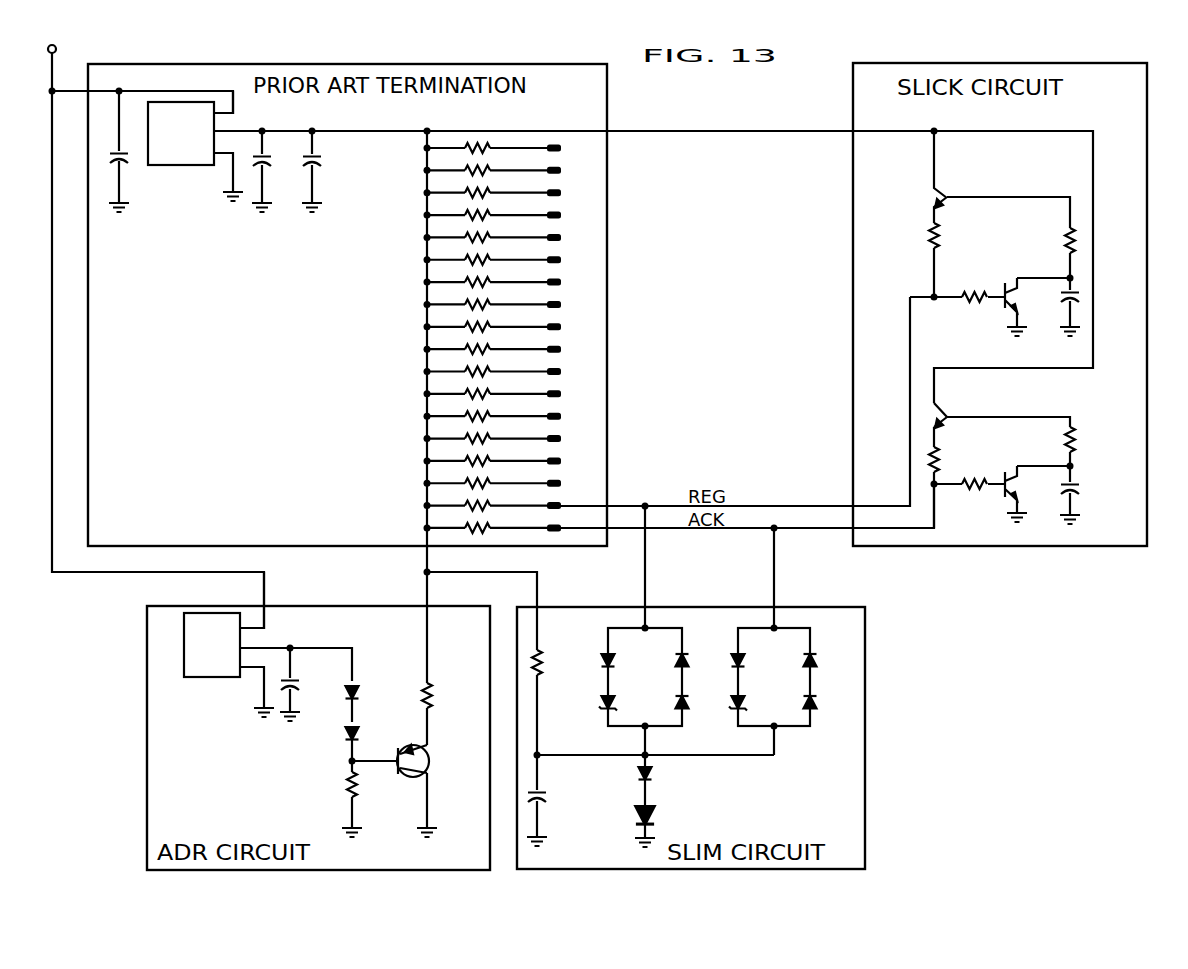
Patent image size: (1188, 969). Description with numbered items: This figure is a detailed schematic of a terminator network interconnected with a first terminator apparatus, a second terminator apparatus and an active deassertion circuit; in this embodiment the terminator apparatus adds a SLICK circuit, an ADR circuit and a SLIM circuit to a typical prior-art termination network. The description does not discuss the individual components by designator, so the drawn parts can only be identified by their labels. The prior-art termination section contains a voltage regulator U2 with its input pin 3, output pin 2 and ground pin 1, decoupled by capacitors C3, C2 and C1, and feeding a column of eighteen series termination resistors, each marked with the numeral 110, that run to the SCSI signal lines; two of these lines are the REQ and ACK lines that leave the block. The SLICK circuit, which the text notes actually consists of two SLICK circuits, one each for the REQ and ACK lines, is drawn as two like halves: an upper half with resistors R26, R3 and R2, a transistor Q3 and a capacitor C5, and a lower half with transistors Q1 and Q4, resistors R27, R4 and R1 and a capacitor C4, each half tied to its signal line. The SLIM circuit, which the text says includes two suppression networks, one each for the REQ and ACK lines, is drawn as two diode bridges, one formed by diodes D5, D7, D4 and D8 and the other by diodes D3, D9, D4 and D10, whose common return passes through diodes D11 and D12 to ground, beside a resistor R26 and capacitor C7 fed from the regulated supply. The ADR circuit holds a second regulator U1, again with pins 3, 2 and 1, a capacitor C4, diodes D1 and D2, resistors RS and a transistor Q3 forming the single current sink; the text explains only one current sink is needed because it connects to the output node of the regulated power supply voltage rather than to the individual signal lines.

The termination resistor 110 is at (451, 337).
The regulator ground pin 1 is at (244, 426).
The regulator output pin 2 is at (252, 380).
The regulator input pin 3 is at (239, 359).
The voltage regulator U1 is at (198, 644).
The voltage regulator U2 is at (167, 129).
The capacitor C1 is at (322, 170).
The capacitor C2 is at (273, 170).
The capacitor C3 is at (112, 150).
The capacitor C4 is at (680, 592).
The capacitor C5 is at (1059, 311).
The capacitor C7 is at (552, 815).
The diode D1 is at (367, 687).
The diode D2 is at (367, 731).
The diode D3 is at (753, 656).
The diode D4 is at (686, 700).
The diode D5 is at (623, 656).
The diode D7 is at (695, 656).
The diode D8 is at (695, 699).
The diode D9 is at (824, 656).
The diode D10 is at (829, 699).
The diode D11 is at (665, 775).
The diode D12 is at (664, 817).
The transistor Q1 is at (957, 423).
The transistor Q3 is at (712, 515).
The transistor Q4 is at (1006, 481).
The resistor R1 is at (971, 497).
The resistor R2 is at (971, 311).
The resistor R3 is at (1055, 244).
The resistor R4 is at (1055, 439).
The resistor R26 is at (756, 449).
The resistor R27 is at (953, 459).
The sense resistor RS is at (403, 740).